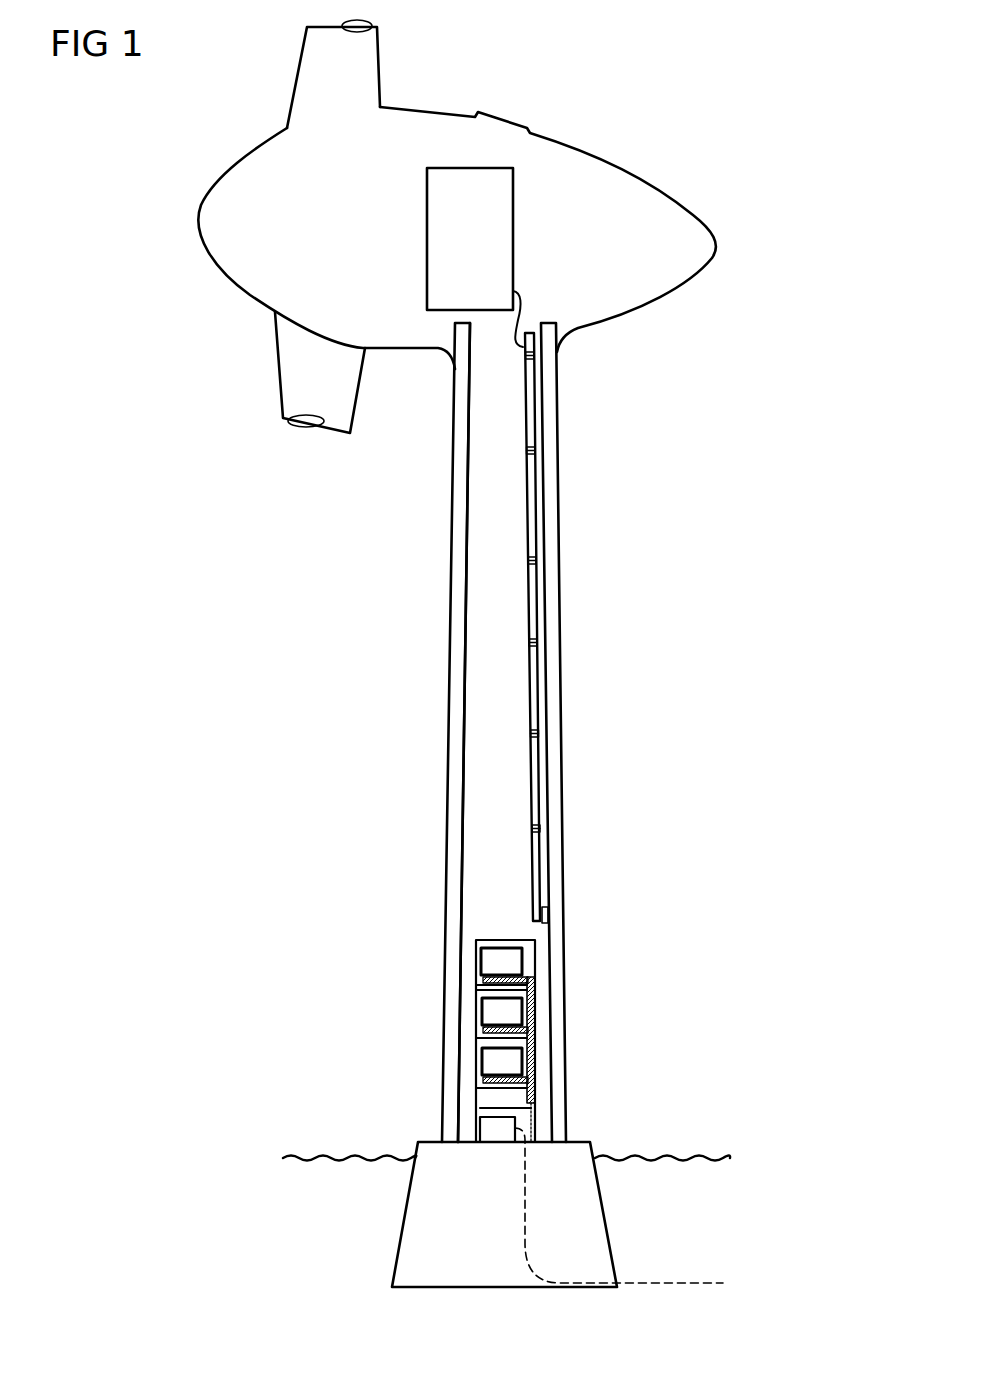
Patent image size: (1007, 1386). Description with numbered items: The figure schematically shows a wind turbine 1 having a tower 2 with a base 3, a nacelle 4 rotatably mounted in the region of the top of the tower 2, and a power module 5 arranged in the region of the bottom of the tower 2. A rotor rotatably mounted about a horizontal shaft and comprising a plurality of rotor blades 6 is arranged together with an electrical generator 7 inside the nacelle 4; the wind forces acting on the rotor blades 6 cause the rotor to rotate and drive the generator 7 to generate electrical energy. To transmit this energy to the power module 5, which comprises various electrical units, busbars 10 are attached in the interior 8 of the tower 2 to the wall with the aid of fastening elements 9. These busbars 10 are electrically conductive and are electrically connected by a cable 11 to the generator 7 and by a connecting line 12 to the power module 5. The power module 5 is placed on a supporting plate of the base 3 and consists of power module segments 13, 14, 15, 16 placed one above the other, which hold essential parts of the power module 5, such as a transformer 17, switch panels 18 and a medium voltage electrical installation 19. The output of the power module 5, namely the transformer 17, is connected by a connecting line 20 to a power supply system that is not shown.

The wind turbine 1 is at (272, 558).
The tower 2 is at (448, 715).
The base 3 is at (420, 1243).
The nacelle 4 is at (597, 158).
The power module 5 is at (491, 1035).
The rotor blades 6 is at (313, 75).
The electrical generator 7 is at (513, 242).
The interior 8 is at (468, 787).
The fastening elements 9 is at (540, 563).
The busbars 10 is at (532, 497).
The cable 11 is at (522, 308).
The connecting line 12 is at (513, 943).
The power module segment 13 is at (480, 943).
The power module segment 14 is at (480, 997).
The switchgear 15 is at (483, 1045).
The power module segment 16 is at (480, 1100).
The transformer 17 is at (490, 1130).
The switch panels 18 is at (513, 967).
The medium voltage electrical installation 19 is at (513, 1102).
The connecting line 20 is at (527, 1223).